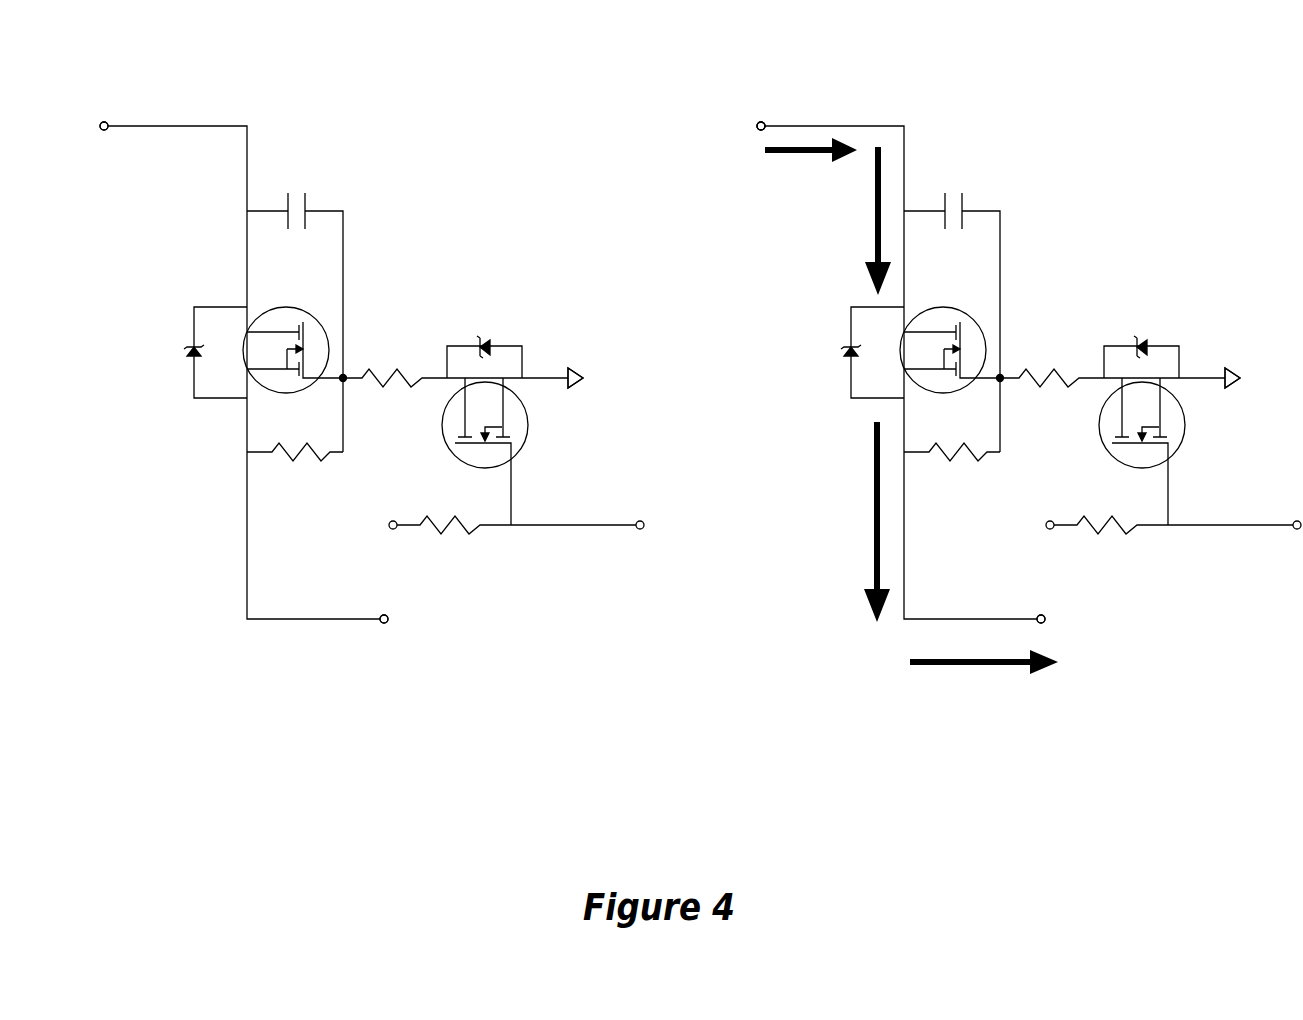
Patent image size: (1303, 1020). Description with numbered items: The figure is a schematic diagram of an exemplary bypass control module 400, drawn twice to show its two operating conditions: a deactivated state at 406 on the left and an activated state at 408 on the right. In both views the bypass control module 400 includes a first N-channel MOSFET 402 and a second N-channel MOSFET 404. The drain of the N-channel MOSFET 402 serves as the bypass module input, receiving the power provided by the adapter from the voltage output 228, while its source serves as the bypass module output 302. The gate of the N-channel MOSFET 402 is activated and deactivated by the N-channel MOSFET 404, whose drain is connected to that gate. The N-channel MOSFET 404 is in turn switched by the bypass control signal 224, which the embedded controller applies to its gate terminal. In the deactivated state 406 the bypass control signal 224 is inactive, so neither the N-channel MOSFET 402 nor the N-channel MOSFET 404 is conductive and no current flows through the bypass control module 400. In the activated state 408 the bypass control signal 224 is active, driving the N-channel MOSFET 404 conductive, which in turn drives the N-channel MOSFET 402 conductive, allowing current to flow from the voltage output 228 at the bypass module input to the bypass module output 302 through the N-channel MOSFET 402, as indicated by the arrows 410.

The voltage output 228 is at (856, 108).
The bypass module output 302 is at (986, 607).
The bypass control signal 224 is at (1263, 498).
The bypass control module 400 is at (421, 255).
The first N-channel MOSFET 402 is at (266, 308).
The second N-channel MOSFET 404 is at (466, 455).
The deactivated state 406 is at (376, 121).
The activated state 408 is at (1038, 125).
The arrows 410 is at (786, 154).